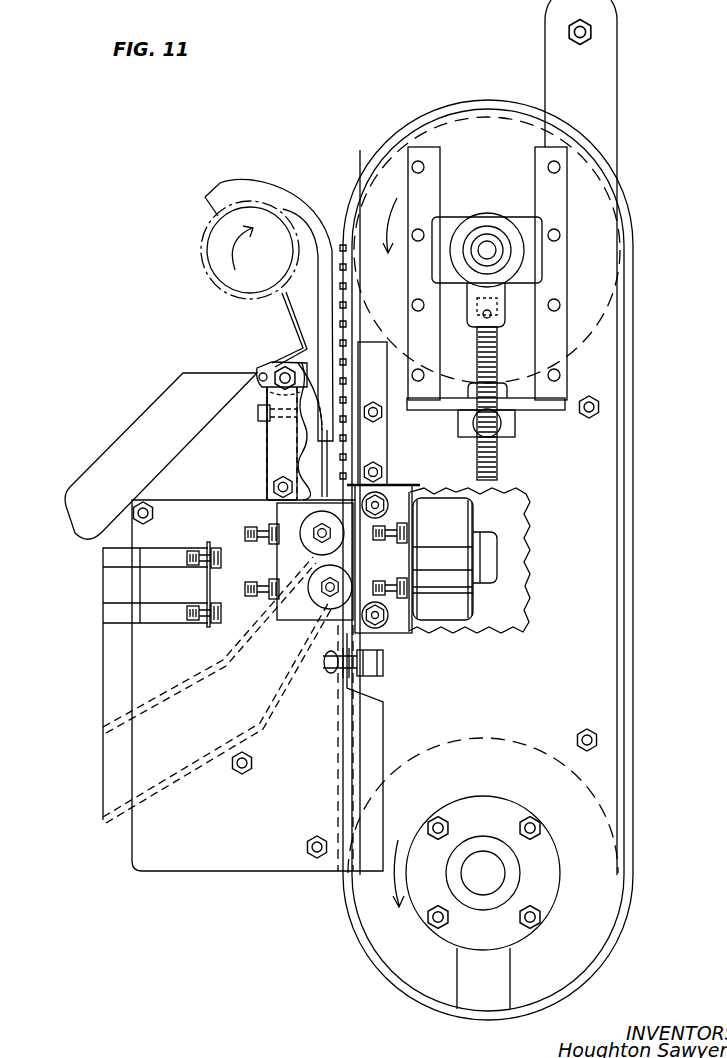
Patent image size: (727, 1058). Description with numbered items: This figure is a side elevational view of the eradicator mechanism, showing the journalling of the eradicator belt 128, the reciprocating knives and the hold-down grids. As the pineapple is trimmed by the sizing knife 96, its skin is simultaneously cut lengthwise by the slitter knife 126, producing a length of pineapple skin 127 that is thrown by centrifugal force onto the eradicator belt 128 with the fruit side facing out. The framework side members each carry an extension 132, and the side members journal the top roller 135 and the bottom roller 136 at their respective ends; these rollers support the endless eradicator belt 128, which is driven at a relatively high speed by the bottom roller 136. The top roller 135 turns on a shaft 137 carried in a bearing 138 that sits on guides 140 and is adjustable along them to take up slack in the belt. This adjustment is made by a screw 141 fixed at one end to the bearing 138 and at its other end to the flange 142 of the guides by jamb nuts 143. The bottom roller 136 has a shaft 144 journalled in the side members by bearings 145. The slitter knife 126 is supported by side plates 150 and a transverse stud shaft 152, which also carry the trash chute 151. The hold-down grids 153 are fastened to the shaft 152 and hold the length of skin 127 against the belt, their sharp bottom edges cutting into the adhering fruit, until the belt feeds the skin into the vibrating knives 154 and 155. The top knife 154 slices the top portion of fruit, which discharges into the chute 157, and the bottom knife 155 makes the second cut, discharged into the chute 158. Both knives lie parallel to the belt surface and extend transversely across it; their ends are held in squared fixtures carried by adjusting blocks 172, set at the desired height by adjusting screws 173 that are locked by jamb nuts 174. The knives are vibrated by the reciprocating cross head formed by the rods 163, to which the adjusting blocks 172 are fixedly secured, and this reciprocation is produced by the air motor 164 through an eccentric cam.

The sizing knife 96 is at (200, 284).
The slitter knife 126 is at (293, 318).
The length of pineapple skin 127 is at (256, 185).
The eradicator belt 128 is at (358, 177).
The extension 132 is at (551, 12).
The top roller 135 is at (455, 134).
The bottom roller 136 is at (382, 918).
The shaft 137 is at (492, 247).
The bearing 138 is at (536, 270).
The guides 140 is at (556, 300).
The screw 141 is at (492, 368).
The flange 142 is at (560, 405).
The jamb nuts 143 is at (500, 422).
The shaft 144 is at (490, 874).
The bearings 145 is at (498, 812).
The side plates 150 is at (272, 464).
The trash chute 151 is at (108, 468).
The transverse stud shaft 152 is at (285, 370).
The hold-down grids 153 is at (320, 453).
The top knife 154 is at (300, 516).
The bottom knife 155 is at (308, 562).
The chute 157 is at (215, 664).
The chute 158 is at (210, 753).
The rods 163 is at (380, 623).
The air motor 164 is at (454, 534).
The adjusting blocks 172 is at (304, 614).
The adjusting screws 173 is at (410, 520).
The jamb nuts 174 is at (395, 526).